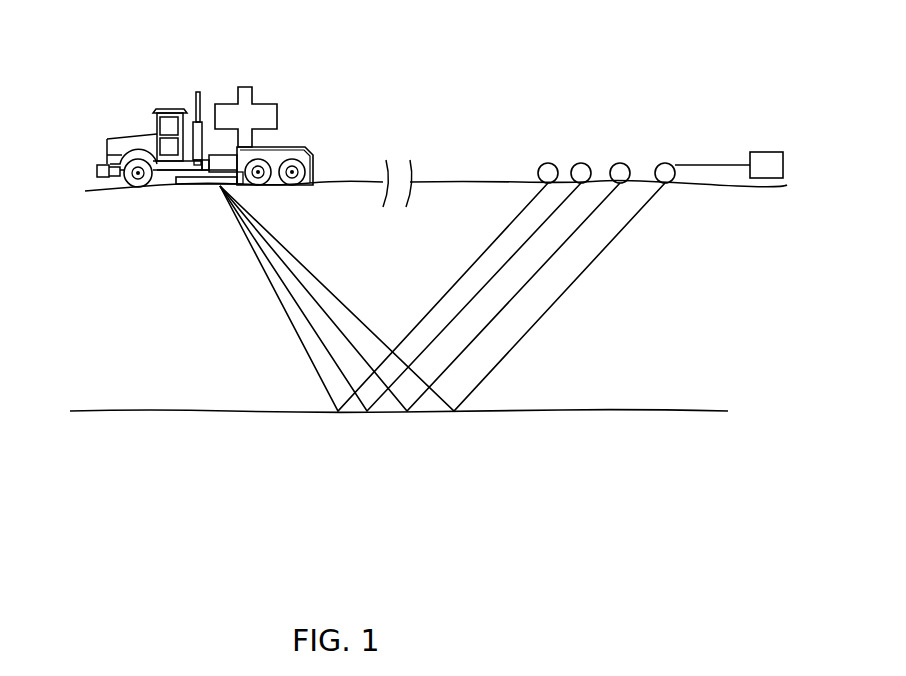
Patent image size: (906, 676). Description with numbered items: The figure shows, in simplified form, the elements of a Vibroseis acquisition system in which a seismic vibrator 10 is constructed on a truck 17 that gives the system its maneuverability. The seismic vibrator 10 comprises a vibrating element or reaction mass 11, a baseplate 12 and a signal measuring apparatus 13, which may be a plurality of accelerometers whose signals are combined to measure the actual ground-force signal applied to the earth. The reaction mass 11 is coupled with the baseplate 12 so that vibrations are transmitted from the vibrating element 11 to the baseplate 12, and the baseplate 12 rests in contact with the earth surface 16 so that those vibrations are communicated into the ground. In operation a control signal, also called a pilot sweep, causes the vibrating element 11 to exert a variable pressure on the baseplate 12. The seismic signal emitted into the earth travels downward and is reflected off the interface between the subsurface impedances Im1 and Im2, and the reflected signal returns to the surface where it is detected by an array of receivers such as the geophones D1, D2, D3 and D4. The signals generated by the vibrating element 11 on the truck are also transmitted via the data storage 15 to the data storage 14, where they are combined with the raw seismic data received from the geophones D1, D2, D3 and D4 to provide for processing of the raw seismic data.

The seismic vibrator 10 is at (118, 91).
The reaction mass 11 is at (256, 104).
The baseplate 12 is at (203, 188).
The signal measuring apparatus 13 is at (238, 186).
The data storage 14 is at (752, 152).
The data storage 15 is at (305, 147).
The earth surface 16 is at (92, 191).
The truck 17 is at (181, 108).
The geophone D1 is at (550, 159).
The geophone D2 is at (583, 159).
The geophone D3 is at (619, 159).
The geophone D4 is at (659, 159).
The subsurface impedance Im1 is at (691, 252).
The subsurface impedance Im2 is at (399, 433).